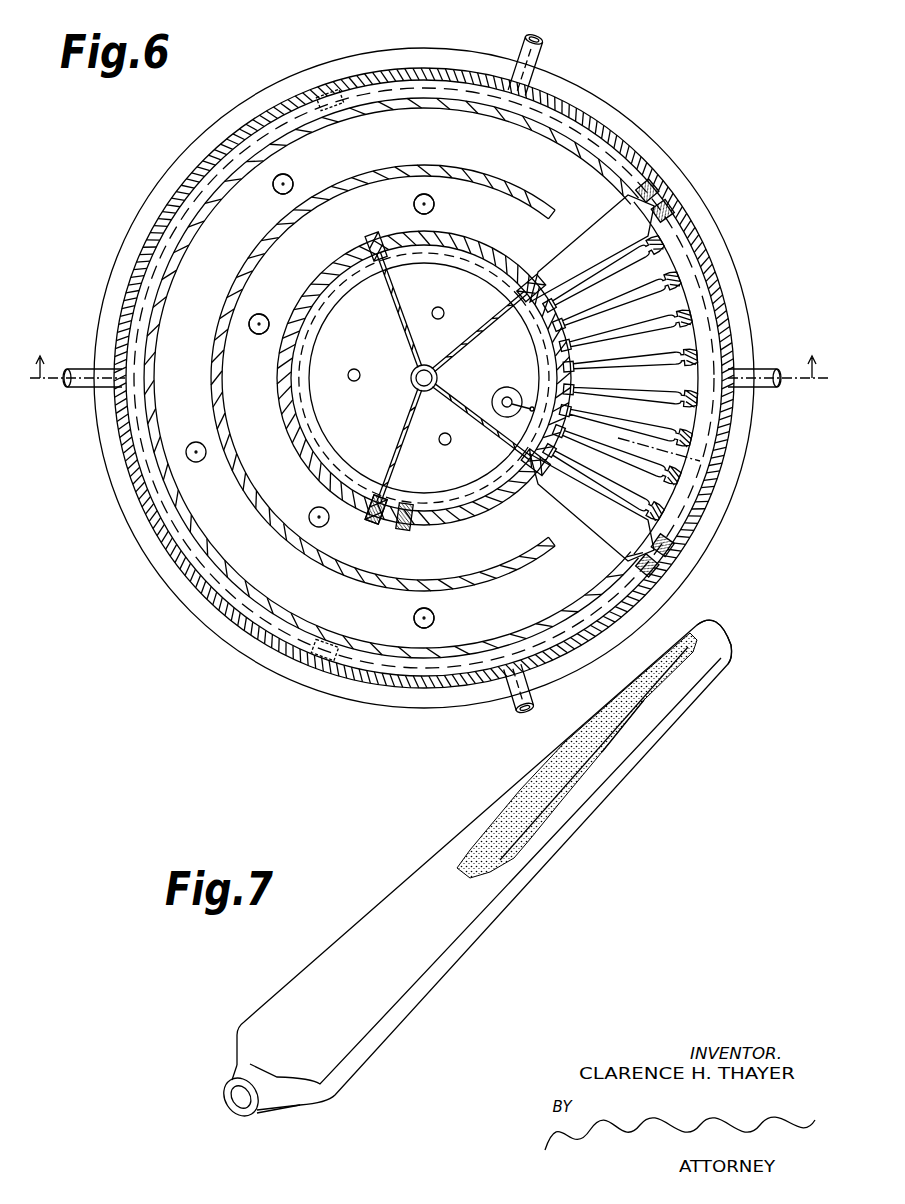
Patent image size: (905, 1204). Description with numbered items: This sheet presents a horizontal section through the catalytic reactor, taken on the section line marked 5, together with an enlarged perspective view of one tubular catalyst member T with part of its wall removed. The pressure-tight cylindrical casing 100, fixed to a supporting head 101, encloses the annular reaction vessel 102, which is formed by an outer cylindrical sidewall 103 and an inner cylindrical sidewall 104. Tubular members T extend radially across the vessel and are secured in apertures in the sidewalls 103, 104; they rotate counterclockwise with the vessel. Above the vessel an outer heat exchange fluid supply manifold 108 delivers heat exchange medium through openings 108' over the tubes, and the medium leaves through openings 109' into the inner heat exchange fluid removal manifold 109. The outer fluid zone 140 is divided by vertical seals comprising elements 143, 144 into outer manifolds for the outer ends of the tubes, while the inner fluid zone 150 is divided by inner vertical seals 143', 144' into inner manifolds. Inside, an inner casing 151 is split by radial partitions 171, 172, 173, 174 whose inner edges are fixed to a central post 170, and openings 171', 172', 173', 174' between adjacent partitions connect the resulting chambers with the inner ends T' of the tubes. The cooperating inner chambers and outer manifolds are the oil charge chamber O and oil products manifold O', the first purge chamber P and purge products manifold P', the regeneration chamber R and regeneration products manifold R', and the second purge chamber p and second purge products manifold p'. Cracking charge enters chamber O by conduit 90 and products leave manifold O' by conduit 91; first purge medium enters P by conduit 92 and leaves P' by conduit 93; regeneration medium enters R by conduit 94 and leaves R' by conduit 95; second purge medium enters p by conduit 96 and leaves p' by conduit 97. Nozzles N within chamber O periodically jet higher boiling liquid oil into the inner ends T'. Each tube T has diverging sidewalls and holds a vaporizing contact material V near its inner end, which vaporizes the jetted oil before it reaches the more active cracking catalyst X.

In FIG. 6, the conduit 90 is at (502, 416).
In FIG. 6, the conduit 91 is at (771, 360).
In FIG. 6, the conduit 92 is at (438, 320).
In FIG. 6, the conduit 93 is at (542, 55).
In FIG. 6, the conduit 94 is at (357, 370).
In FIG. 6, the conduit 95 is at (76, 366).
In FIG. 6, the conduit 96 is at (444, 433).
In FIG. 6, the conduit 97 is at (521, 705).
In FIG. 6, the cylindrical casing 100 is at (228, 613).
In FIG. 6, the supporting head 101 is at (345, 690).
In FIG. 6, the reaction vessel 102 is at (210, 202).
In FIG. 6, the outer cylindrical sidewall 103 is at (406, 100).
In FIG. 6, the inner cylindrical sidewall 104 is at (292, 444).
In FIG. 6, the outer heat exchange fluid supply manifold 108 is at (310, 401).
In FIG. 6, the openings 108' is at (390, 388).
In FIG. 6, the inner heat exchange fluid removal manifold 109 is at (341, 360).
In FIG. 6, the openings 109' is at (357, 236).
In FIG. 6, the outer fluid zone 140 is at (693, 270).
In FIG. 6, the vertical seal element 143 is at (675, 353).
In FIG. 6, the vertical seal element 144 is at (695, 358).
In FIG. 6, the inner vertical seal 143' is at (419, 529).
In FIG. 6, the inner vertical seal 144' is at (368, 525).
In FIG. 6, the inner fluid zone 150 is at (279, 383).
In FIG. 6, the inner casing 151 is at (318, 345).
In FIG. 6, the central post 170 is at (410, 381).
In FIG. 6, the radial partition 171 is at (491, 416).
In FIG. 6, the radial partition 172 is at (489, 323).
In FIG. 6, the radial partition 173 is at (381, 300).
In FIG. 6, the radial partition 174 is at (393, 457).
In FIG. 6, the opening 171' is at (520, 376).
In FIG. 6, the opening 172' is at (450, 251).
In FIG. 6, the opening 173' is at (340, 362).
In FIG. 6, the opening 174' is at (452, 499).
In FIG. 6, the tubular member T is at (619, 378).
In FIG. 7, the tubular member T is at (484, 865).
In FIG. 6, the inner end of tubular member T' is at (537, 370).
In FIG. 7, the inner end of tubular member T' is at (732, 657).
In FIG. 6, the nozzle N is at (565, 423).
In FIG. 7, the vaporizing contact material V is at (668, 700).
In FIG. 7, the cracking catalyst X is at (530, 833).
In FIG. 6, the first purge medium chamber P is at (432, 287).
In FIG. 6, the purge products manifold P' is at (401, 340).
In FIG. 6, the oil charge chamber O is at (471, 386).
In FIG. 6, the oil products manifold O' is at (742, 291).
In FIG. 6, the regeneration medium chamber R is at (340, 407).
In FIG. 6, the regeneration products manifold R' is at (400, 378).
In FIG. 6, the second purge medium chamber p is at (418, 458).
In FIG. 6, the second purge products manifold p' is at (437, 709).
In FIG. 6, the section line 5 is at (425, 348).